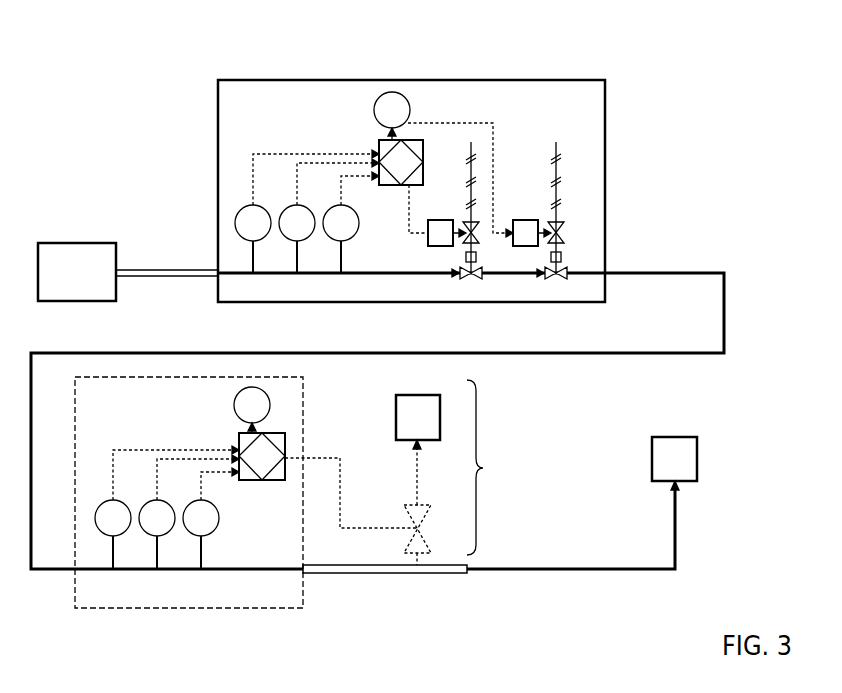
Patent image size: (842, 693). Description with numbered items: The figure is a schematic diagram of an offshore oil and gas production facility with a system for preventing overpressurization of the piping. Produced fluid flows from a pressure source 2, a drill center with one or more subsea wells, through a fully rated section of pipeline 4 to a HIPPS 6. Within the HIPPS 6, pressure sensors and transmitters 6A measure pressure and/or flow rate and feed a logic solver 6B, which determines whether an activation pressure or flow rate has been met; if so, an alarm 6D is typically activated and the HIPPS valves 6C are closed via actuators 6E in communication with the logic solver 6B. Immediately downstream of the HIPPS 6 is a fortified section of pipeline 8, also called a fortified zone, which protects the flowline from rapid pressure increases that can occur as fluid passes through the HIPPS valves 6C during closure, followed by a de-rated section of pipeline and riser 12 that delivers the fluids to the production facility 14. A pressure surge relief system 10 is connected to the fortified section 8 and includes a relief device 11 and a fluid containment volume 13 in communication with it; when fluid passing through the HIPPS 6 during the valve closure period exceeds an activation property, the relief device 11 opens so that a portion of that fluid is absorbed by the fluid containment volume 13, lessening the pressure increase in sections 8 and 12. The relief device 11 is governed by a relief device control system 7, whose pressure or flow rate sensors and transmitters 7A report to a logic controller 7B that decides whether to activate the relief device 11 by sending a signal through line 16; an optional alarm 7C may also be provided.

The pressure source 2 is at (71, 280).
The fully rated section of pipeline 4 is at (165, 271).
The HIPPS 6 is at (235, 80).
The pressure sensors and transmitters 6A is at (244, 231).
The logic solver 6B is at (378, 150).
The HIPPS valve 6C is at (460, 271).
The alarm 6D is at (383, 118).
The actuator 6E is at (445, 220).
The relief device control system 7 is at (75, 437).
The pressure or flow rate sensors and transmitters 7A is at (104, 526).
The logic controller 7B is at (239, 440).
The alarm 7C is at (243, 413).
The fortified section of pipeline 8 is at (350, 565).
The pressure surge relief system 10 is at (485, 467).
The relief device 11 is at (408, 520).
The de-rated section of pipeline and riser 12 is at (585, 567).
The fluid containment volume 13 is at (410, 425).
The production facility 14 is at (667, 466).
The line 16 is at (338, 457).